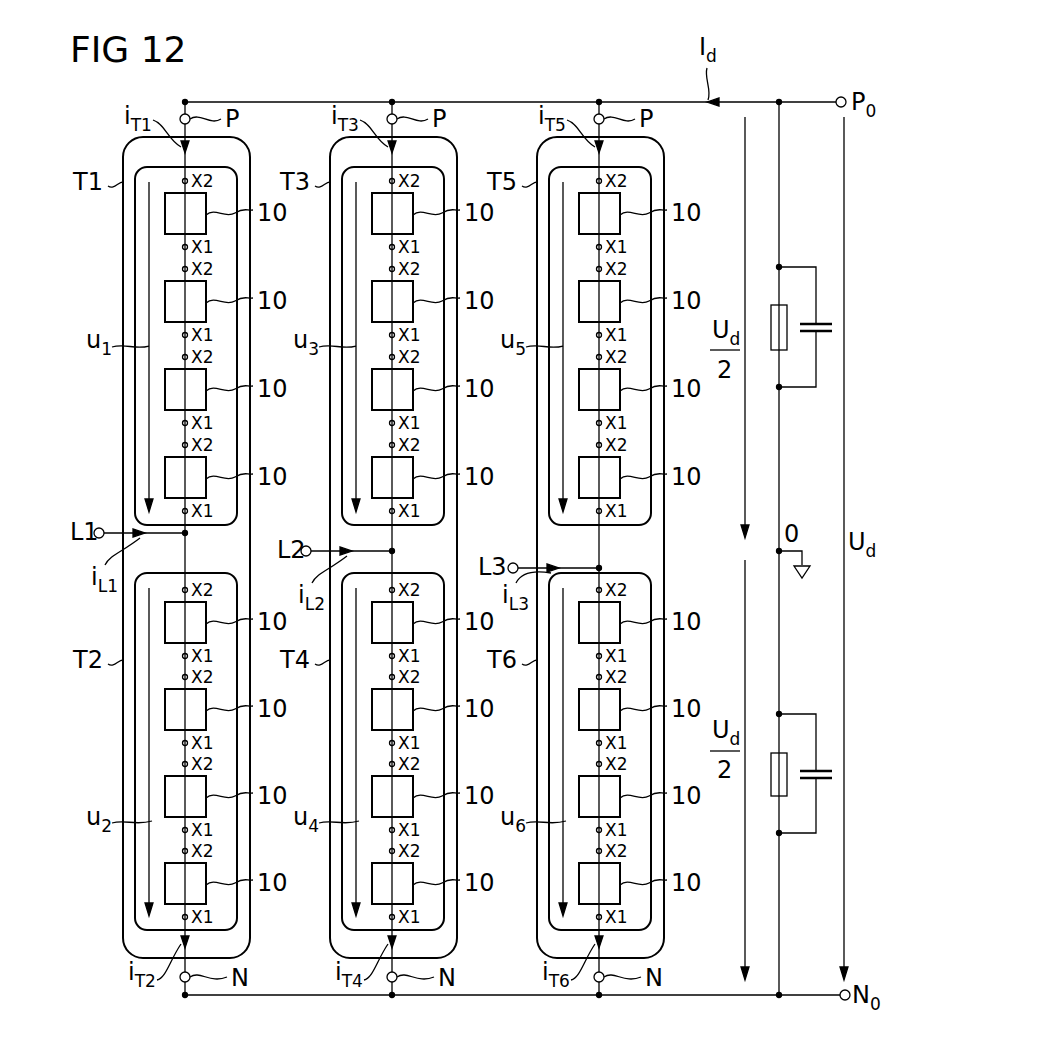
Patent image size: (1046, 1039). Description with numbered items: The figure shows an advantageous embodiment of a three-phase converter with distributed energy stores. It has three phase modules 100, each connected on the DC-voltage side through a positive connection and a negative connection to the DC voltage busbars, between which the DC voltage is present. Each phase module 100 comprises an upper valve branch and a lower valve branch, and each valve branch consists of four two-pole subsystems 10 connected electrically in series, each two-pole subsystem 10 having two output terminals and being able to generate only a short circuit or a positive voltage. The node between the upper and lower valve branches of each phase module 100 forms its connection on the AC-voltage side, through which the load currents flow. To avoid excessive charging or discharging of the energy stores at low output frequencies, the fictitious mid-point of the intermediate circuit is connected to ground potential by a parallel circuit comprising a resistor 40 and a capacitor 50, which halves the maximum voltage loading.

The two-pole subsystem 10 is at (433, 549).
The resistor 40 is at (771, 302).
The capacitor 50 is at (824, 322).
The phase module 100 is at (250, 150).